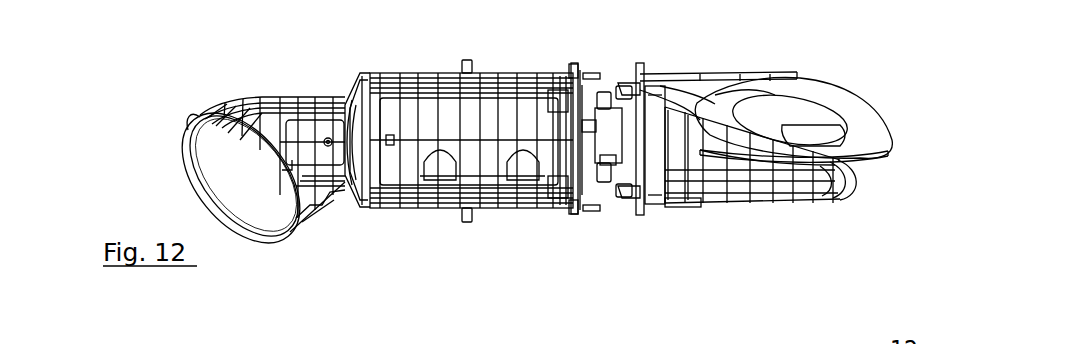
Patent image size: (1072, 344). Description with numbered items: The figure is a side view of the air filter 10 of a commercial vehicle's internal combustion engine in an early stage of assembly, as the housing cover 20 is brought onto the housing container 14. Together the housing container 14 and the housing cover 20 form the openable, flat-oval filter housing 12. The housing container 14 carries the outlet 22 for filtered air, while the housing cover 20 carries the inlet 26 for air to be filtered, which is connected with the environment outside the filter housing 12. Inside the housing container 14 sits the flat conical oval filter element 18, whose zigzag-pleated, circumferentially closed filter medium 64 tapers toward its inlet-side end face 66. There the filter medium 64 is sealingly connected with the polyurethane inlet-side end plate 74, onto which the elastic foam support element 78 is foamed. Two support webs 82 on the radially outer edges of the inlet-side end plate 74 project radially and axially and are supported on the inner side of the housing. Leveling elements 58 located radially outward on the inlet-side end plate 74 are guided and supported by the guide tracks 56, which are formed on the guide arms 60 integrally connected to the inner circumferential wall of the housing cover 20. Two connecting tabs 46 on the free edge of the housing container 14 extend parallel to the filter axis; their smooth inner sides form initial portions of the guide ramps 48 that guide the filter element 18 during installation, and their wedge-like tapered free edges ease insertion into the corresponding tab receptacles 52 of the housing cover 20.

The air filter 10 is at (133, 95).
The filter housing 12 is at (361, 74).
The housing container 14 is at (418, 78).
The filter element 18 is at (583, 113).
The housing cover 20 is at (797, 180).
The outlet 22 is at (215, 165).
The inlet 26 is at (860, 153).
The connecting tabs 46 is at (590, 75).
The guide ramps 48 is at (576, 76).
The tab receptacles 52 is at (696, 82).
The guide tracks 56 is at (630, 87).
The leveling elements 58 is at (604, 92).
The guide arms 60 is at (690, 80).
The filter medium 64 is at (588, 126).
The inlet-side end face 66 is at (607, 163).
The inlet-side end plate 74 is at (790, 78).
The support element 78 is at (745, 100).
The support webs 82 is at (607, 163).